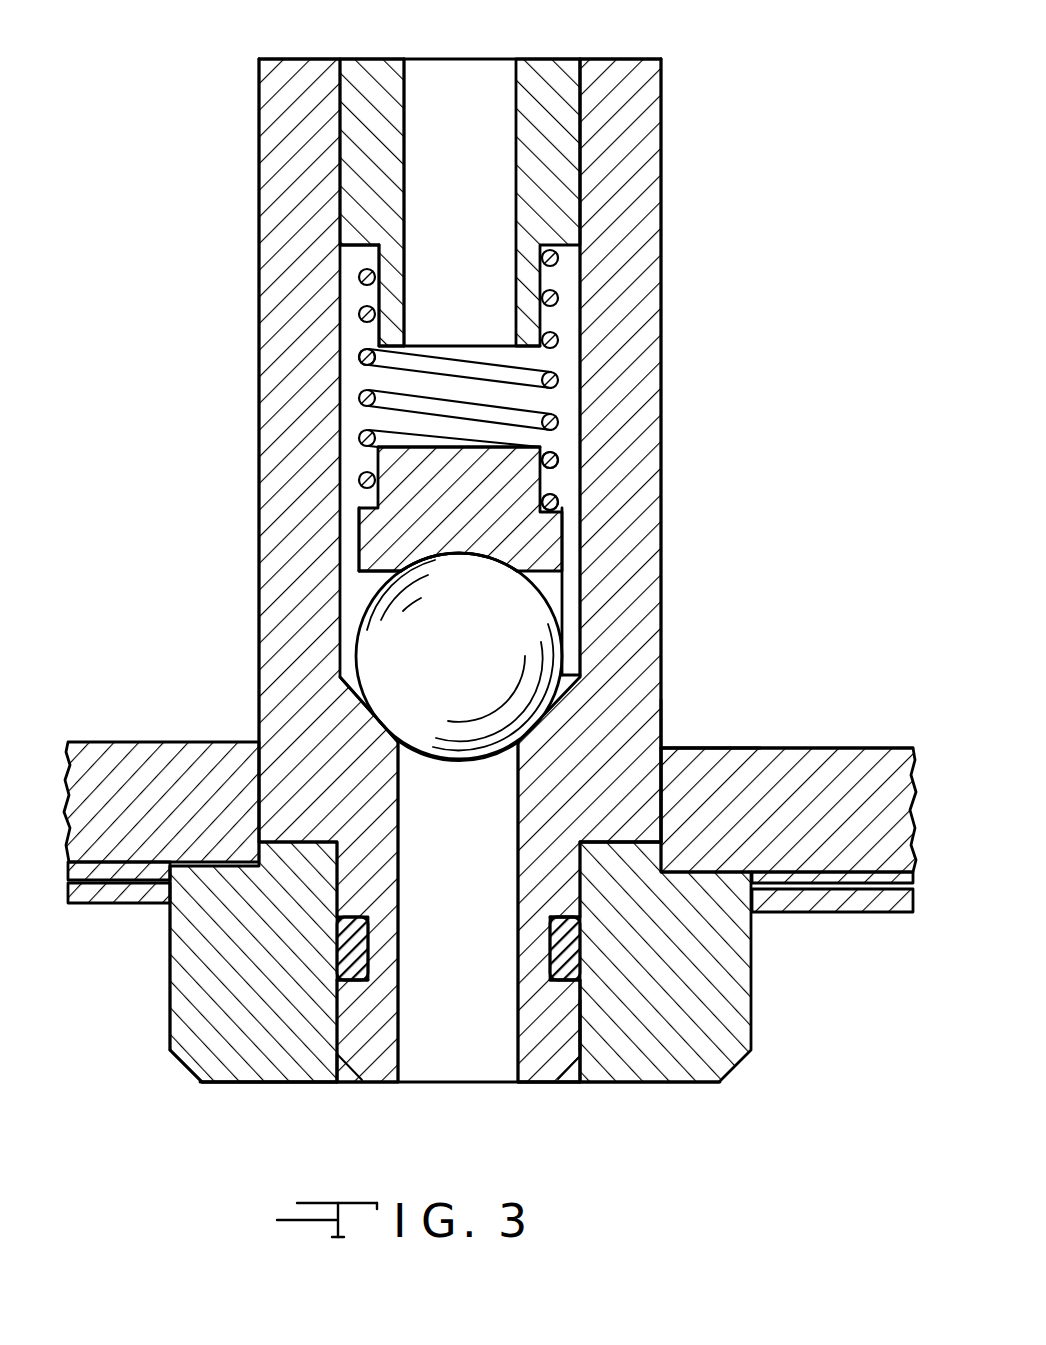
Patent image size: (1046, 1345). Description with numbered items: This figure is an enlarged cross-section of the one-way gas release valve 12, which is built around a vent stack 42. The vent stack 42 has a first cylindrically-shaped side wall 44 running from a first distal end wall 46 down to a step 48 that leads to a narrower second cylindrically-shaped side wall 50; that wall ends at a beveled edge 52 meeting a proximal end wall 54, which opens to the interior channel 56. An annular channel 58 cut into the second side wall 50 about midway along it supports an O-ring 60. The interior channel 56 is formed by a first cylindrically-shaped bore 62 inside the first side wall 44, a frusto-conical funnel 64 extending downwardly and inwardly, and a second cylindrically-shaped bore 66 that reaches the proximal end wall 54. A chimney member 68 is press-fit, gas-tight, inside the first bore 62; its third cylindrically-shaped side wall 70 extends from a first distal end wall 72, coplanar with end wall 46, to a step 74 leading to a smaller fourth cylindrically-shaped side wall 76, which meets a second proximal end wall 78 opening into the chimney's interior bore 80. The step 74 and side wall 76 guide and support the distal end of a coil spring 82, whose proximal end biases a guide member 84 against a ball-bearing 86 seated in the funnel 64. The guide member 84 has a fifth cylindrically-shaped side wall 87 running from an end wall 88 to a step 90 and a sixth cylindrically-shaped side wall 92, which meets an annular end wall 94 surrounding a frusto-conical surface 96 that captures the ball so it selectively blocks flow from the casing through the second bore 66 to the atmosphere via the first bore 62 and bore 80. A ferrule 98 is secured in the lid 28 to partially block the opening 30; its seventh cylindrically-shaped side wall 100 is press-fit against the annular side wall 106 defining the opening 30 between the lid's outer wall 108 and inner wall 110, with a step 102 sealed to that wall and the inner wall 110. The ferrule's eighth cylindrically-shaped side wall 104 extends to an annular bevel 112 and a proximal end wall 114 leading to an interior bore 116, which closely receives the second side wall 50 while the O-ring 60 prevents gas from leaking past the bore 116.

The one-way gas release valve 12 is at (496, 570).
The lid 28 is at (797, 746).
The opening 30 is at (664, 802).
The vent stack 42 is at (652, 197).
The first cylindrically-shaped side wall 44 is at (665, 137).
The first distal end wall 46 is at (662, 56).
The step 48 is at (630, 843).
The second cylindrically-shaped side wall 50 is at (582, 1034).
The beveled edge 52 is at (567, 1070).
The proximal end wall 54 is at (538, 1084).
The interior channel 56 is at (446, 1062).
The annular channel 58 is at (386, 972).
The O-ring 60 is at (356, 940).
The first cylindrically-shaped bore 62 is at (580, 337).
The frusto-conical funnel 64 is at (350, 675).
The second cylindrically-shaped bore 66 is at (418, 760).
The chimney member 68 is at (557, 77).
The third cylindrically-shaped side wall 70 is at (259, 83).
The first distal end wall 72 is at (374, 60).
The step 74 is at (363, 243).
The fourth cylindrically-shaped side wall 76 is at (378, 258).
The second proximal end wall 78 is at (394, 346).
The interior bore 80 is at (404, 276).
The coil spring 82 is at (573, 383).
The guide member 84 is at (550, 540).
The ball-bearing 86 is at (537, 640).
The fifth cylindrically-shaped side wall 87 is at (553, 490).
The end wall 88 is at (392, 444).
The step 90 is at (558, 487).
The sixth cylindrically-shaped side wall 92 is at (564, 571).
The annular end wall 94 is at (363, 574).
The frusto-conical surface 96 is at (407, 558).
The ferrule 98 is at (737, 1017).
The seventh cylindrically-shaped side wall 100 is at (253, 845).
The step 102 is at (203, 864).
The eighth cylindrically-shaped side wall 104 is at (168, 960).
The annular side wall 106 is at (712, 756).
The outer wall 108 is at (871, 747).
The inner wall 110 is at (871, 866).
The annular bevel 112 is at (178, 1062).
The proximal end wall 114 is at (252, 1085).
The interior bore 116 is at (345, 1085).